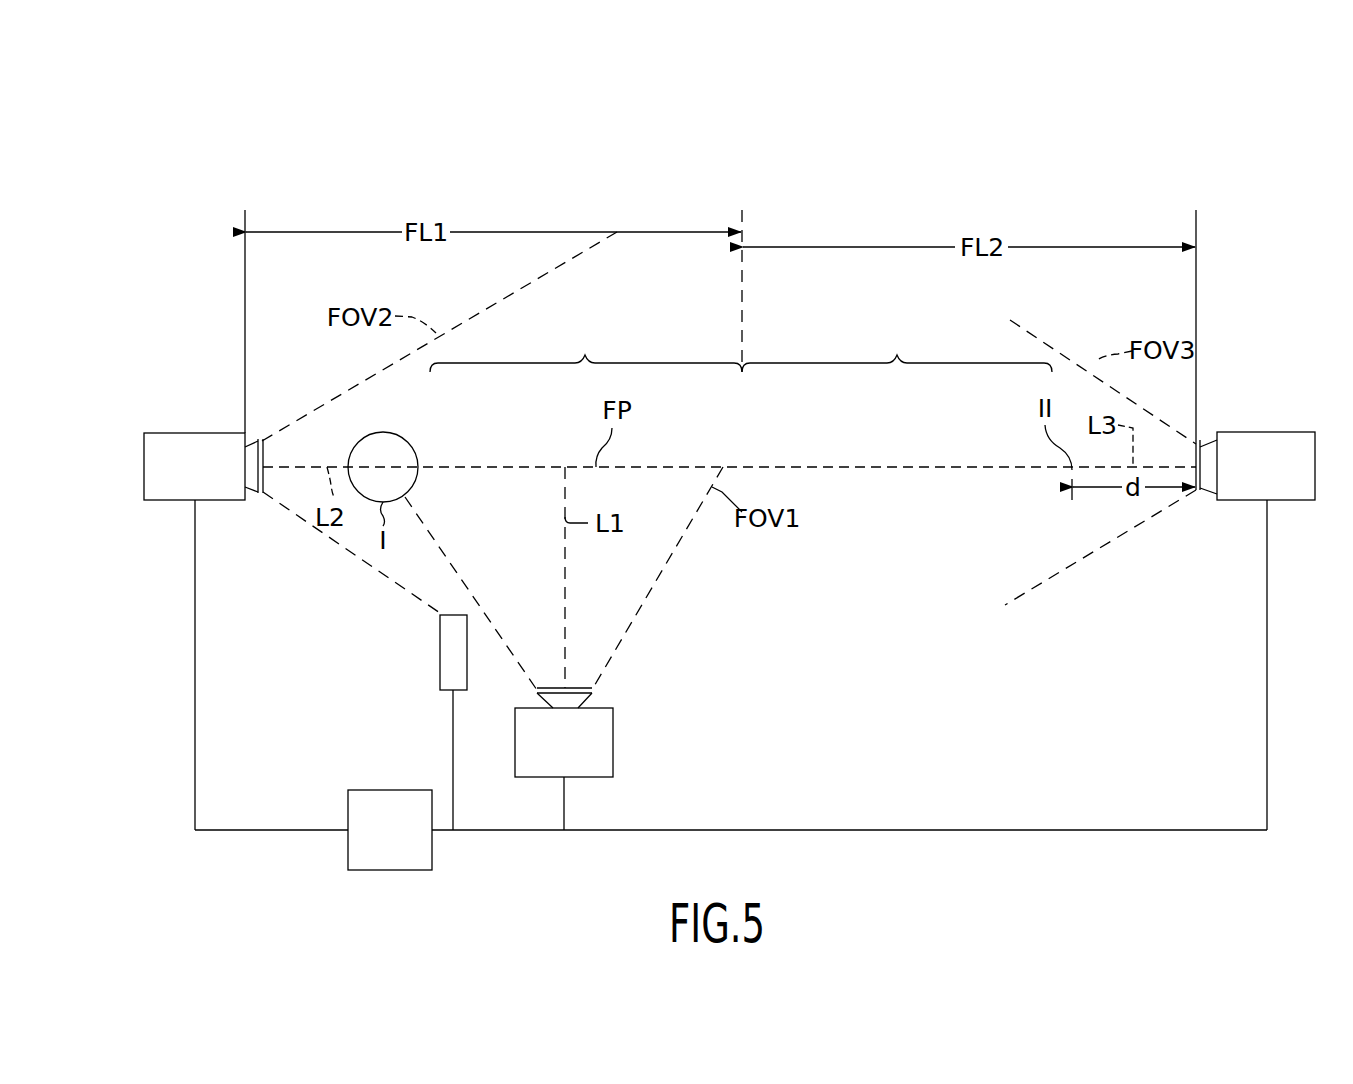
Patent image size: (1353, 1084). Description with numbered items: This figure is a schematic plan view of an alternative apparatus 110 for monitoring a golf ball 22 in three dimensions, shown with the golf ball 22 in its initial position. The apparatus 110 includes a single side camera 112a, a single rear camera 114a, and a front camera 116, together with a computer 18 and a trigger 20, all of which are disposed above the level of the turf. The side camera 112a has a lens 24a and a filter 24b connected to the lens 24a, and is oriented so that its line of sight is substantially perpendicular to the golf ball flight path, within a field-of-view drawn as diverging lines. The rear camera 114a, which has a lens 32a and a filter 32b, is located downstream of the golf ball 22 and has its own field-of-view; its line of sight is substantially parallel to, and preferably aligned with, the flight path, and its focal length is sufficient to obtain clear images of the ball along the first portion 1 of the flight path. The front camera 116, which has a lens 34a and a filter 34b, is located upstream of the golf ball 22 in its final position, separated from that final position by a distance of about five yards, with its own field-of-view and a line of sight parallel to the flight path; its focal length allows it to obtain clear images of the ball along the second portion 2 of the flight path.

The apparatus 110 is at (857, 176).
The rear camera 114a is at (182, 433).
The front camera 116 is at (1242, 432).
The lens 32a is at (250, 498).
The filter 32b is at (262, 498).
The lens 34a is at (1210, 497).
The filter 34b is at (1196, 494).
The golf ball 22 is at (383, 432).
The trigger 20 is at (440, 650).
The lens 24a is at (540, 700).
The filter 24b is at (592, 688).
The side camera 112a is at (613, 740).
The computer 18 is at (432, 852).
The first portion 1 is at (586, 345).
The second portion 2 is at (897, 346).